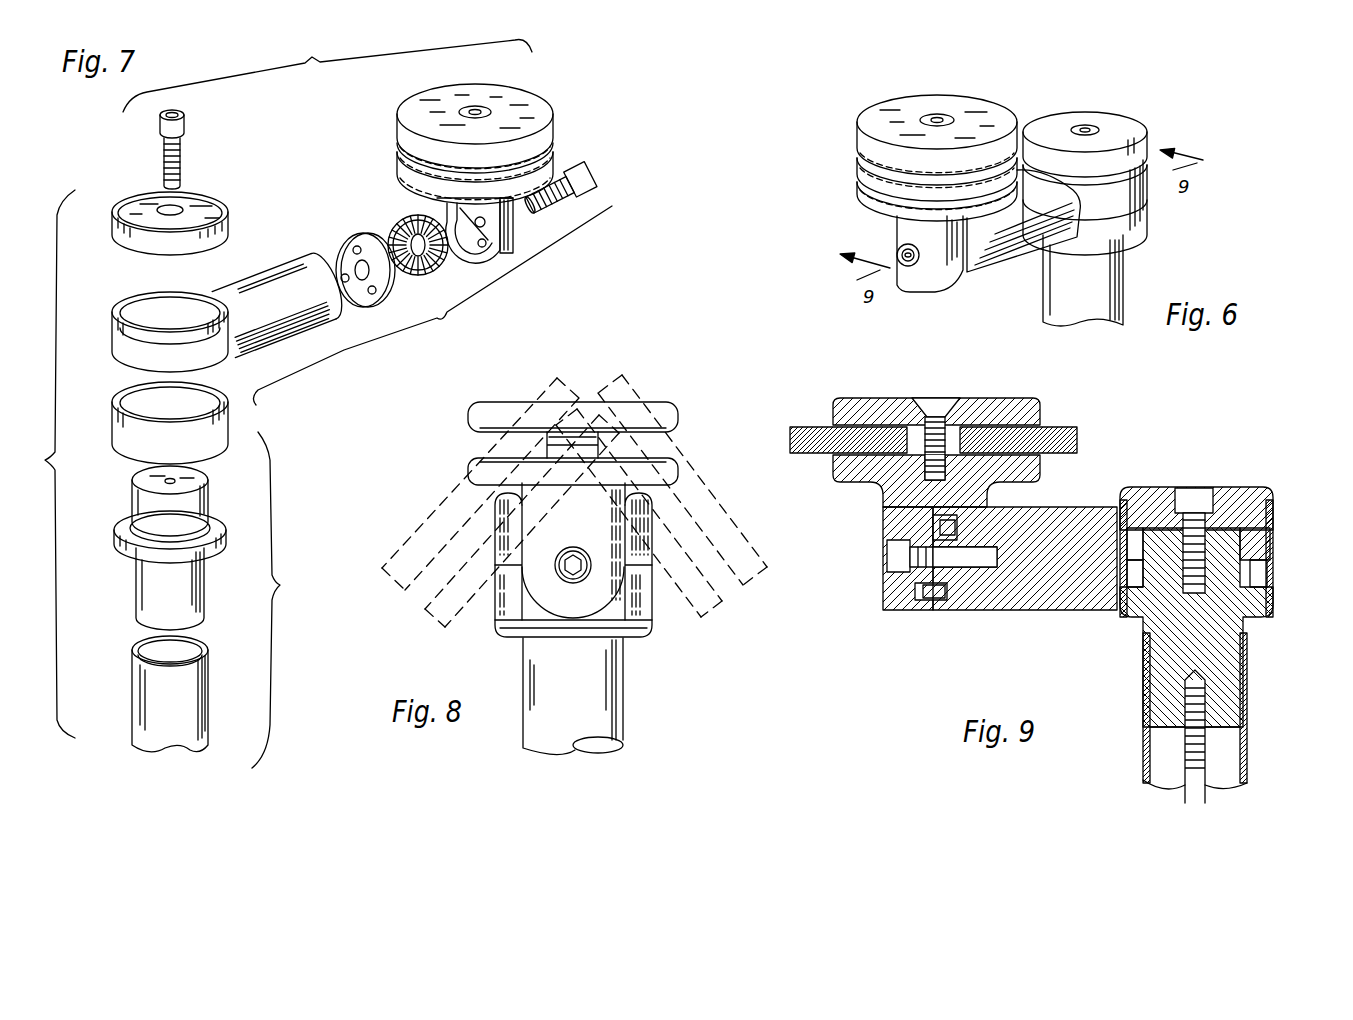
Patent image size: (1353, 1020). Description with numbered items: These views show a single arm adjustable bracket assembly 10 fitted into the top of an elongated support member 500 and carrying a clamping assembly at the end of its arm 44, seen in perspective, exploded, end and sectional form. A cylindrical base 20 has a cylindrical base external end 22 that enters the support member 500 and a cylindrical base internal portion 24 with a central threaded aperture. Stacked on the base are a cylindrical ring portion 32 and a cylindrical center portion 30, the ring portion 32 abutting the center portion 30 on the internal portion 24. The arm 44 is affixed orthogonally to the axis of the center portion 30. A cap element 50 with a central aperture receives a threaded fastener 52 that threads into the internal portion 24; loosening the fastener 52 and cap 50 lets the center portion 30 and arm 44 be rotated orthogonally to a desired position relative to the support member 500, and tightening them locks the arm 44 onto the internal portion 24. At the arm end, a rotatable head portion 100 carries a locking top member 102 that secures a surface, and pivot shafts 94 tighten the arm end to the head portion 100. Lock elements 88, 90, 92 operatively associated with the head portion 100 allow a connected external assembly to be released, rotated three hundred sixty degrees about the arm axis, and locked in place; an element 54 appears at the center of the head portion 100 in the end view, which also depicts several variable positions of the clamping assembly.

In FIG. 9, the adjustable bracket assembly 10 is at (1117, 432).
In FIG. 7, the cylindrical base 20 is at (125, 540).
In FIG. 9, the cylindrical base 20 is at (1163, 660).
In FIG. 7, the cylindrical base external end 22 is at (190, 595).
In FIG. 7, the cylindrical base internal portion 24 is at (140, 505).
In FIG. 7, the cylindrical center portion 30 is at (135, 345).
In FIG. 9, the cylindrical center portion 30 is at (1270, 540).
In FIG. 7, the cylindrical ring portion 32 is at (130, 433).
In FIG. 9, the cylindrical ring portion 32 is at (1273, 580).
In FIG. 7, the arm 44 is at (265, 263).
In FIG. 6, the arm 44 is at (997, 268).
In FIG. 9, the arm 44 is at (1047, 600).
In FIG. 7, the cap element 50 is at (205, 215).
In FIG. 9, the cap element 50 is at (1228, 487).
In FIG. 7, the threaded fastener 52 is at (186, 130).
In FIG. 8, the hex bolt 54 is at (593, 570).
In FIG. 7, the lock element 88 is at (465, 255).
In FIG. 7, the lock element 90 is at (395, 225).
In FIG. 7, the lock element 92 is at (387, 327).
In FIG. 7, the pivot shaft 94 is at (588, 170).
In FIG. 7, the rotatable head portion 100 is at (513, 225).
In FIG. 8, the rotatable head portion 100 is at (540, 583).
In FIG. 6, the rotatable head portion 100 is at (893, 230).
In FIG. 9, the rotatable head portion 100 is at (880, 507).
In FIG. 7, the locking top member 102 is at (515, 100).
In FIG. 8, the locking top member 102 is at (578, 412).
In FIG. 6, the locking top member 102 is at (890, 113).
In FIG. 9, the locking top member 102 is at (870, 397).
In FIG. 7, the elongated support member 500 is at (195, 690).
In FIG. 8, the elongated support member 500 is at (618, 687).
In FIG. 6, the elongated support member 500 is at (1123, 272).
In FIG. 9, the elongated support member 500 is at (1143, 745).